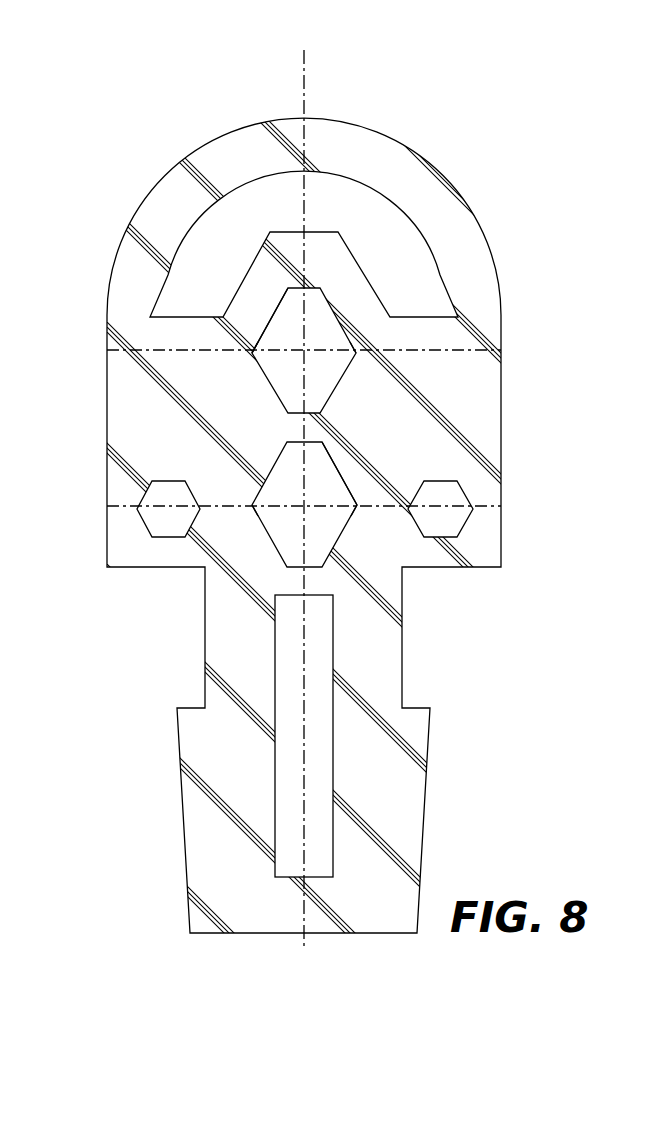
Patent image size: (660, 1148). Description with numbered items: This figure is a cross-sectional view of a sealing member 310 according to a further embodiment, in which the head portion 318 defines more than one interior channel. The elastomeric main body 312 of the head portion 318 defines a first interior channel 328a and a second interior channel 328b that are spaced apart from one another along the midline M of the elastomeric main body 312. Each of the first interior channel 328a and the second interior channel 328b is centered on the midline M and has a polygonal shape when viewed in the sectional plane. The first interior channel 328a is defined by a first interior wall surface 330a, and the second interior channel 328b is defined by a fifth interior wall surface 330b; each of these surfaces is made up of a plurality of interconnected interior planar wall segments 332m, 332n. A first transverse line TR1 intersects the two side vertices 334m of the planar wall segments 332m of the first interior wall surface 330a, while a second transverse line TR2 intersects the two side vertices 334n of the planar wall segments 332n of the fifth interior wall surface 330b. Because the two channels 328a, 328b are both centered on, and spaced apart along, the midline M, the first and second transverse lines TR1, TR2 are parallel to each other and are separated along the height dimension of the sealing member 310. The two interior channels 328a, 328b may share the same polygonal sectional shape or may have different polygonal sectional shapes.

The sealing member 310 is at (330, 500).
The elastomeric main body 312 is at (476, 402).
The head portion 318 is at (512, 446).
The first interior channel 328a is at (296, 342).
The second interior channel 328b is at (337, 522).
The first interior wall surface 330a is at (282, 300).
The fifth interior wall surface 330b is at (323, 478).
The interior planar wall segments 332m is at (273, 393).
The interior planar wall segments 332n is at (278, 463).
The side vertices 334m is at (250, 353).
The side vertices 334n is at (252, 507).
The midline M is at (304, 68).
The first transverse line TR1 is at (477, 350).
The second transverse line TR2 is at (485, 504).